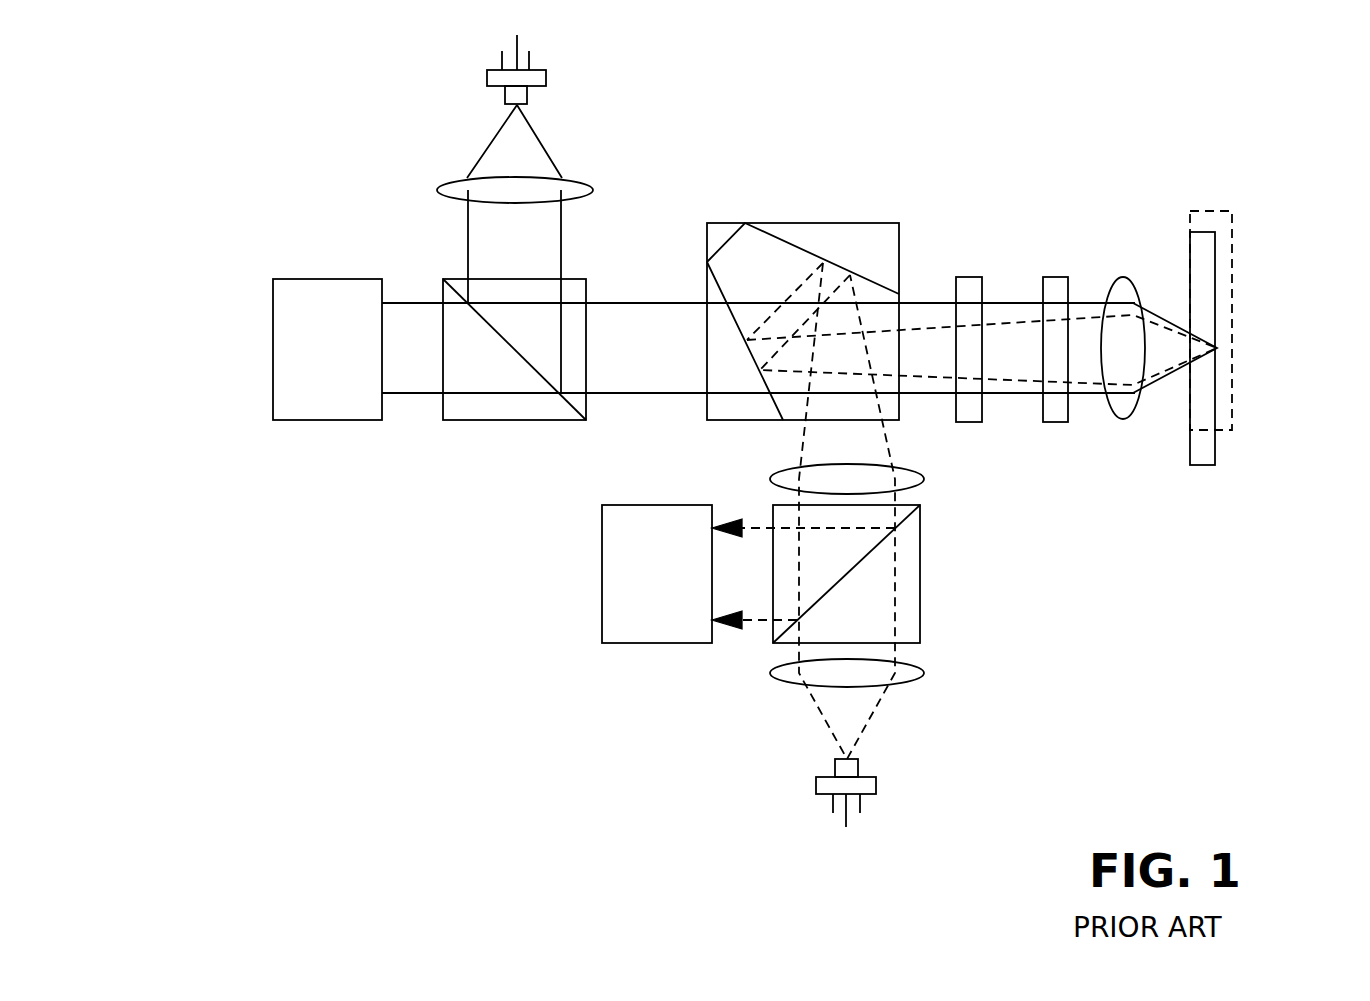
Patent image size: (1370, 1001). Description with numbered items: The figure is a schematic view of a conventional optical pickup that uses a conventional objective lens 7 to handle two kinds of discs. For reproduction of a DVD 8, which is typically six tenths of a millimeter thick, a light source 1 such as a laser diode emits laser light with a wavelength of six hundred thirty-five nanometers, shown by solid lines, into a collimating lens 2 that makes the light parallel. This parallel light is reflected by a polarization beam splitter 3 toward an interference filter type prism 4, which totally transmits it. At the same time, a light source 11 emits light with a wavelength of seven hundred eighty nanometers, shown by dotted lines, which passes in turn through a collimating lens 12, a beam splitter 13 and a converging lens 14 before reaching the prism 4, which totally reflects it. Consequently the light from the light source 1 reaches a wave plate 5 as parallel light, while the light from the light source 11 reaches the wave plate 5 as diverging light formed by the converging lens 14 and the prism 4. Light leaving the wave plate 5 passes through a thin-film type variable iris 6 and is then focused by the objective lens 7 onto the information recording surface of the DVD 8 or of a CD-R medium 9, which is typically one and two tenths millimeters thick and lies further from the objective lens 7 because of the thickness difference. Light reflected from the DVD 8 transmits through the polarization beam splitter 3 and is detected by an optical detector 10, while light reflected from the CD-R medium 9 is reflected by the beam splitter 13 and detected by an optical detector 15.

The light source 1 is at (546, 78).
The collimating lens 2 is at (576, 187).
The polarization beam splitter 3 is at (503, 420).
The interference filter type prism 4 is at (826, 223).
The wave plate 5 is at (966, 277).
The thin-film type variable iris 6 is at (1055, 422).
The objective lens 7 is at (1123, 285).
The DVD 8 is at (1205, 465).
The CD-R medium 9 is at (1232, 295).
The optical detector 10 is at (273, 382).
The light source 11 is at (876, 780).
The collimating lens 12 is at (775, 680).
The beam splitter 13 is at (920, 630).
The converging lens 14 is at (920, 482).
The optical detector 15 is at (602, 620).